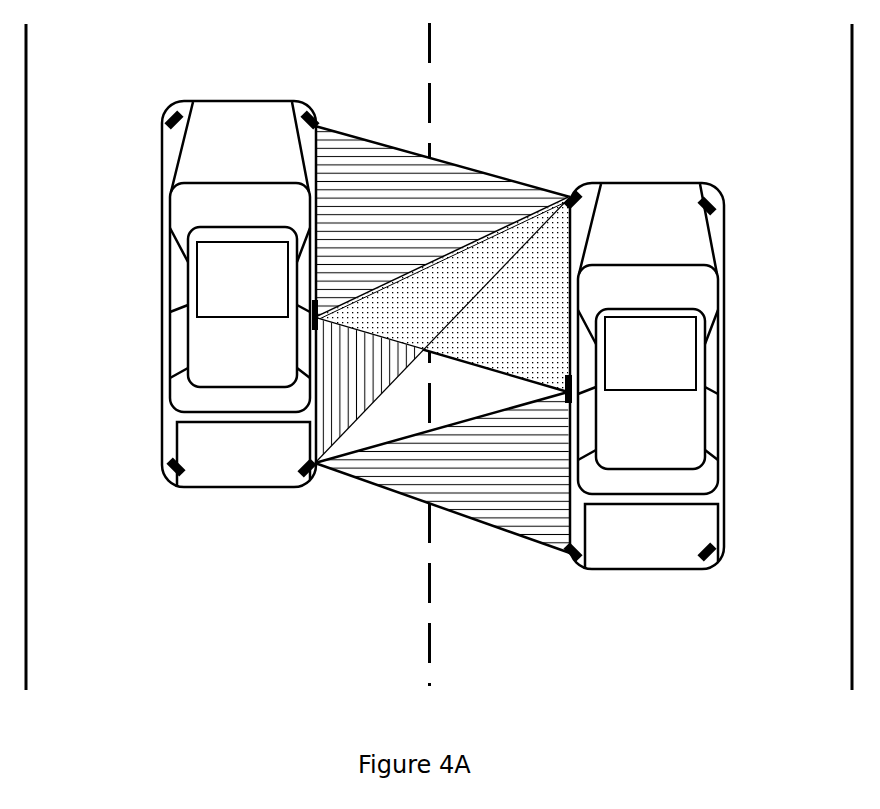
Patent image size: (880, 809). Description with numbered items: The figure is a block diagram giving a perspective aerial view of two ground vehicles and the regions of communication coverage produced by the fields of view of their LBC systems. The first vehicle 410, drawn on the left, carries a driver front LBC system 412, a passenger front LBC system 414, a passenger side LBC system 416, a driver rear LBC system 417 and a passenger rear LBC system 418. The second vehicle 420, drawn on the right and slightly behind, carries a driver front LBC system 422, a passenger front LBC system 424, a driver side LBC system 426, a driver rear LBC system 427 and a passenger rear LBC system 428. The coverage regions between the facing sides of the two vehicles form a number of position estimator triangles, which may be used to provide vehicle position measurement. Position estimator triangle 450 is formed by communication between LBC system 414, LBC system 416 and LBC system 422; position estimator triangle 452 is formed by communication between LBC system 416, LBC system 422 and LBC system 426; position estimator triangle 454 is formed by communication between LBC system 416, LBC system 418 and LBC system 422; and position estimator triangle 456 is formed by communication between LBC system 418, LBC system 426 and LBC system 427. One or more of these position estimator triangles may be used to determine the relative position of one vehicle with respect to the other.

The vehicle 410 is at (239, 294).
The driver front LBC system 412 is at (176, 110).
The passenger front LBC system 414 is at (311, 113).
The passenger side LBC system 416 is at (300, 329).
The driver rear LBC system 417 is at (176, 478).
The passenger rear LBC system 418 is at (311, 477).
The vehicle 420 is at (647, 376).
The driver front LBC system 422 is at (571, 190).
The passenger front LBC system 424 is at (707, 196).
The driver side LBC system 426 is at (576, 396).
The driver rear LBC system 427 is at (571, 562).
The passenger rear LBC system 428 is at (707, 562).
The position estimator triangle 450 is at (442, 222).
The position estimator triangle 452 is at (442, 294).
The position estimator triangle 454 is at (442, 330).
The position estimator triangle 456 is at (442, 472).